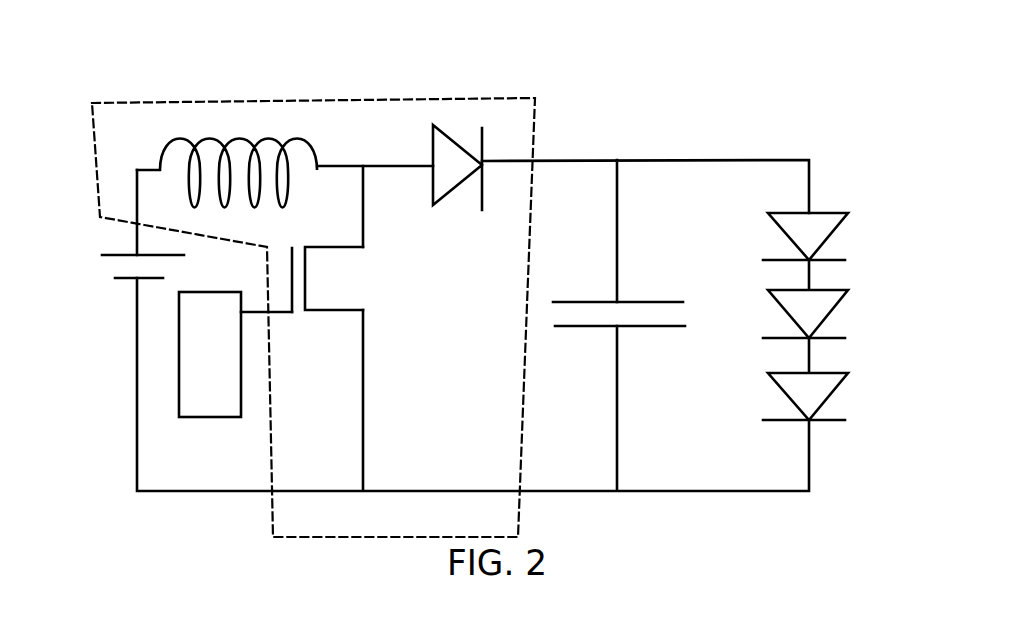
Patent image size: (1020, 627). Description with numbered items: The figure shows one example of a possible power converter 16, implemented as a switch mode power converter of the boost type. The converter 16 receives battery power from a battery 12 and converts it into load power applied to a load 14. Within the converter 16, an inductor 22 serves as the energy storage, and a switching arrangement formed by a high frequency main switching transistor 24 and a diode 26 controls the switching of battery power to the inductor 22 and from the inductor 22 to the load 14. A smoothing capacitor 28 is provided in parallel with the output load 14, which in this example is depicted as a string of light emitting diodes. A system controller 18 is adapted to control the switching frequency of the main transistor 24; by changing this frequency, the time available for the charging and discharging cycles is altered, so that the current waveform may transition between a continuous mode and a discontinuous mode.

The battery 12 is at (124, 279).
The load 14 is at (866, 277).
The power converter 16 is at (149, 103).
The system controller 18 is at (223, 418).
The inductor 22 is at (234, 138).
The main switching transistor 24 is at (338, 250).
The diode 26 is at (432, 127).
The smoothing capacitor 28 is at (651, 302).